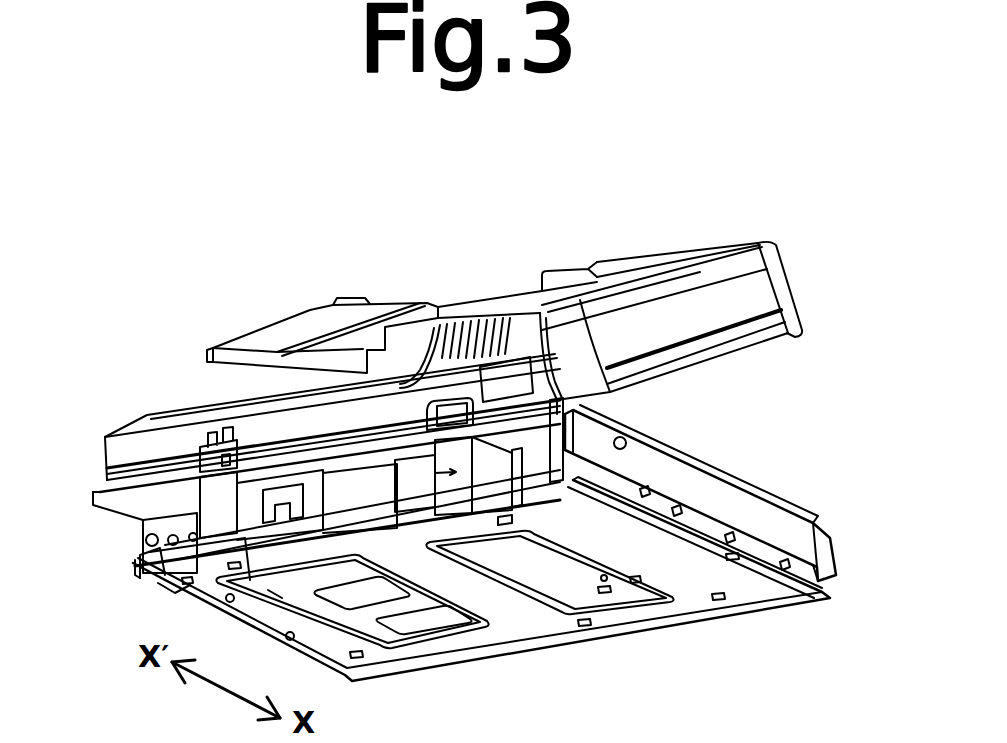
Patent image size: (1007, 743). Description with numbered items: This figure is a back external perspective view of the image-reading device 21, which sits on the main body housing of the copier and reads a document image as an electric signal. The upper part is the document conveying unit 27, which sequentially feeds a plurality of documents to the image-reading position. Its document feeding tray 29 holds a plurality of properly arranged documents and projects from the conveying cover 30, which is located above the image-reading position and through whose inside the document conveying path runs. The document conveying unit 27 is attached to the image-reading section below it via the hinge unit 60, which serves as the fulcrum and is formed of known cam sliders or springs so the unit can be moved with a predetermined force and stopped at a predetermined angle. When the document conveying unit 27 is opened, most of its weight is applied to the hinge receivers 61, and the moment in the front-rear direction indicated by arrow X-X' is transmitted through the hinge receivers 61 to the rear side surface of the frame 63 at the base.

The image-reading device 21 is at (756, 476).
The document conveying unit 27 is at (443, 268).
The document feeding tray 29 is at (290, 327).
The conveying cover 30 is at (710, 252).
The hinge unit 60 is at (400, 417).
The hinge receivers 61 is at (420, 478).
The frame 63 is at (628, 636).